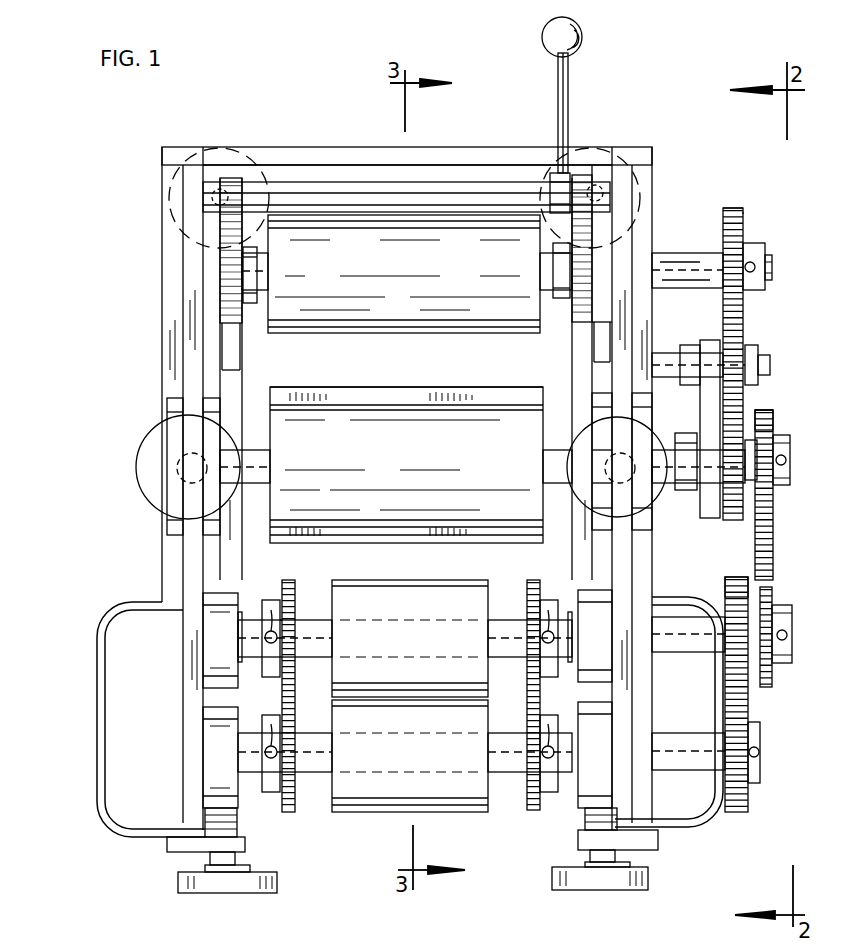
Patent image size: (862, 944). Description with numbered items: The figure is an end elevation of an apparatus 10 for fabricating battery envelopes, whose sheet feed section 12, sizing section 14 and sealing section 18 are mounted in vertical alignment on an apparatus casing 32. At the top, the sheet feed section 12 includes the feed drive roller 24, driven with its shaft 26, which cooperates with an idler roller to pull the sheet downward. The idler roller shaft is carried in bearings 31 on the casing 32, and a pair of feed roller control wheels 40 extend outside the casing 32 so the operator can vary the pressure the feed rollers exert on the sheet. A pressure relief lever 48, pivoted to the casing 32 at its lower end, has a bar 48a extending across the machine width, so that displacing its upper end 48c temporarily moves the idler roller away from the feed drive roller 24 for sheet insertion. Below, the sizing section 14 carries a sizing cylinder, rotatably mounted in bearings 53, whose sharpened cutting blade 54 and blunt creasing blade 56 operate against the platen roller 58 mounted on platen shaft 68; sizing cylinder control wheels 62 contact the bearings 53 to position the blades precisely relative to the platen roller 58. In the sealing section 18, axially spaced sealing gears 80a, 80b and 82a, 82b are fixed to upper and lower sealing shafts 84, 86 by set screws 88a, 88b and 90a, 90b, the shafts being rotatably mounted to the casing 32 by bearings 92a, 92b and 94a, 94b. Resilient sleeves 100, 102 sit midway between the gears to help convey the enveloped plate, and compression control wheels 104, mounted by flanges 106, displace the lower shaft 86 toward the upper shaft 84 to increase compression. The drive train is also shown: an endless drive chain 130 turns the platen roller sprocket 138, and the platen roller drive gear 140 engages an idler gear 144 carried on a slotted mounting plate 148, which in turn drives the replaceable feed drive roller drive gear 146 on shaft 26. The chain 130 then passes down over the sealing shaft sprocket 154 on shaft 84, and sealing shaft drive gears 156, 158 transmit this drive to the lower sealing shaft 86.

The apparatus 10 is at (772, 218).
The sheet feed section 12 is at (770, 266).
The sizing section 14 is at (794, 460).
The sealing section 18 is at (798, 618).
The feed drive roller 24 is at (420, 270).
The feed drive roller shaft 26 is at (268, 263).
The bearings 31 is at (228, 328).
The apparatus casing 32 is at (166, 327).
The feed roller control wheels 40 is at (214, 144).
The pressure relief lever 48 is at (568, 120).
The bar 48a is at (470, 183).
The upper end 48c is at (578, 50).
The sizing cylinder shaft bearings 53 is at (220, 400).
The cutting blade 54 is at (416, 386).
The creasing blade 56 is at (440, 543).
The platen roller 58 is at (430, 457).
The sizing cylinder control wheels 62 is at (146, 432).
The platen shaft 68 is at (270, 458).
The sealing gear 80a is at (300, 582).
The sealing gear 80b is at (528, 582).
The sealing gear 82a is at (288, 812).
The sealing gear 82b is at (533, 810).
The upper sealing shaft 84 is at (316, 658).
The lower sealing shaft 86 is at (318, 775).
The set screw 88a is at (269, 610).
The set screw 88b is at (549, 610).
The set screw 90a is at (268, 722).
The set screw 90b is at (548, 722).
The bearing 92a is at (206, 616).
The bearing 92b is at (596, 590).
The bearing 94a is at (206, 731).
The bearing 94b is at (610, 714).
The sleeve 100 is at (437, 623).
The sleeve 102 is at (437, 737).
The compression control wheels 104 is at (227, 894).
The flanges 106 is at (166, 850).
The drive chain 130 is at (774, 524).
The platen roller sprocket 138 is at (761, 409).
The platen roller drive gear 140 is at (734, 520).
The idler gear 144 is at (743, 334).
The feed drive roller drive gear 146 is at (735, 206).
The mounting plate 148 is at (770, 364).
The sealing shaft sprocket 154 is at (770, 674).
The sealing shaft drive gear 156 is at (726, 584).
The sealing shaft drive gear 158 is at (749, 799).